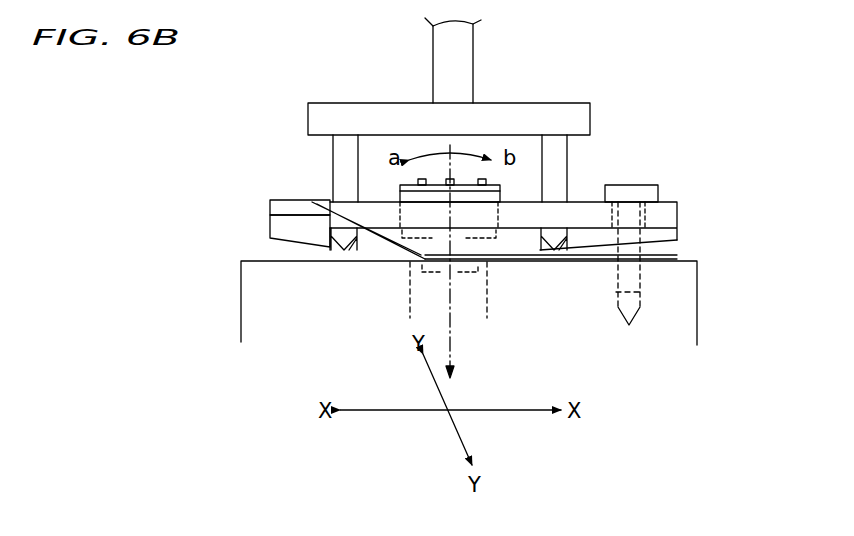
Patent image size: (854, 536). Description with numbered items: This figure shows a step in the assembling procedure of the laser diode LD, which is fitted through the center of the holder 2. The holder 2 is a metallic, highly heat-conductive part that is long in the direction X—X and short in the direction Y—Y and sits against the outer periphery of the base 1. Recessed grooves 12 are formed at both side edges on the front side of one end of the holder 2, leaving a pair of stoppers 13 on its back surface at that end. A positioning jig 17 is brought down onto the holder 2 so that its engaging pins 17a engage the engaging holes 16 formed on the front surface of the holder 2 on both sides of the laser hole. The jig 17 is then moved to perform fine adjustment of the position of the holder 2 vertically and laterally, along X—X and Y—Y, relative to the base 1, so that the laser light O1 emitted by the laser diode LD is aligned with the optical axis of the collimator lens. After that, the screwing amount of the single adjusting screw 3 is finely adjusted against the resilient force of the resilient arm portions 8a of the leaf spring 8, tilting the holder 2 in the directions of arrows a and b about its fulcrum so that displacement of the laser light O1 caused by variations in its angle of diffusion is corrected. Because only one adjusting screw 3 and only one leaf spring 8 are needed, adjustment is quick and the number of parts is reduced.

The base 1 is at (250, 300).
The holder 2 is at (690, 212).
The adjusting screw 3 is at (655, 193).
The leaf spring 8 is at (670, 256).
The resilient arm portions 8a is at (313, 201).
The recessed grooves 12 is at (270, 207).
The stoppers 13 is at (270, 229).
The engaging holes 16 is at (348, 262).
The positioning jig 17 is at (440, 43).
The engaging pins 17a is at (344, 138).
The laser diode LD is at (500, 200).
The laser light O1 is at (452, 353).